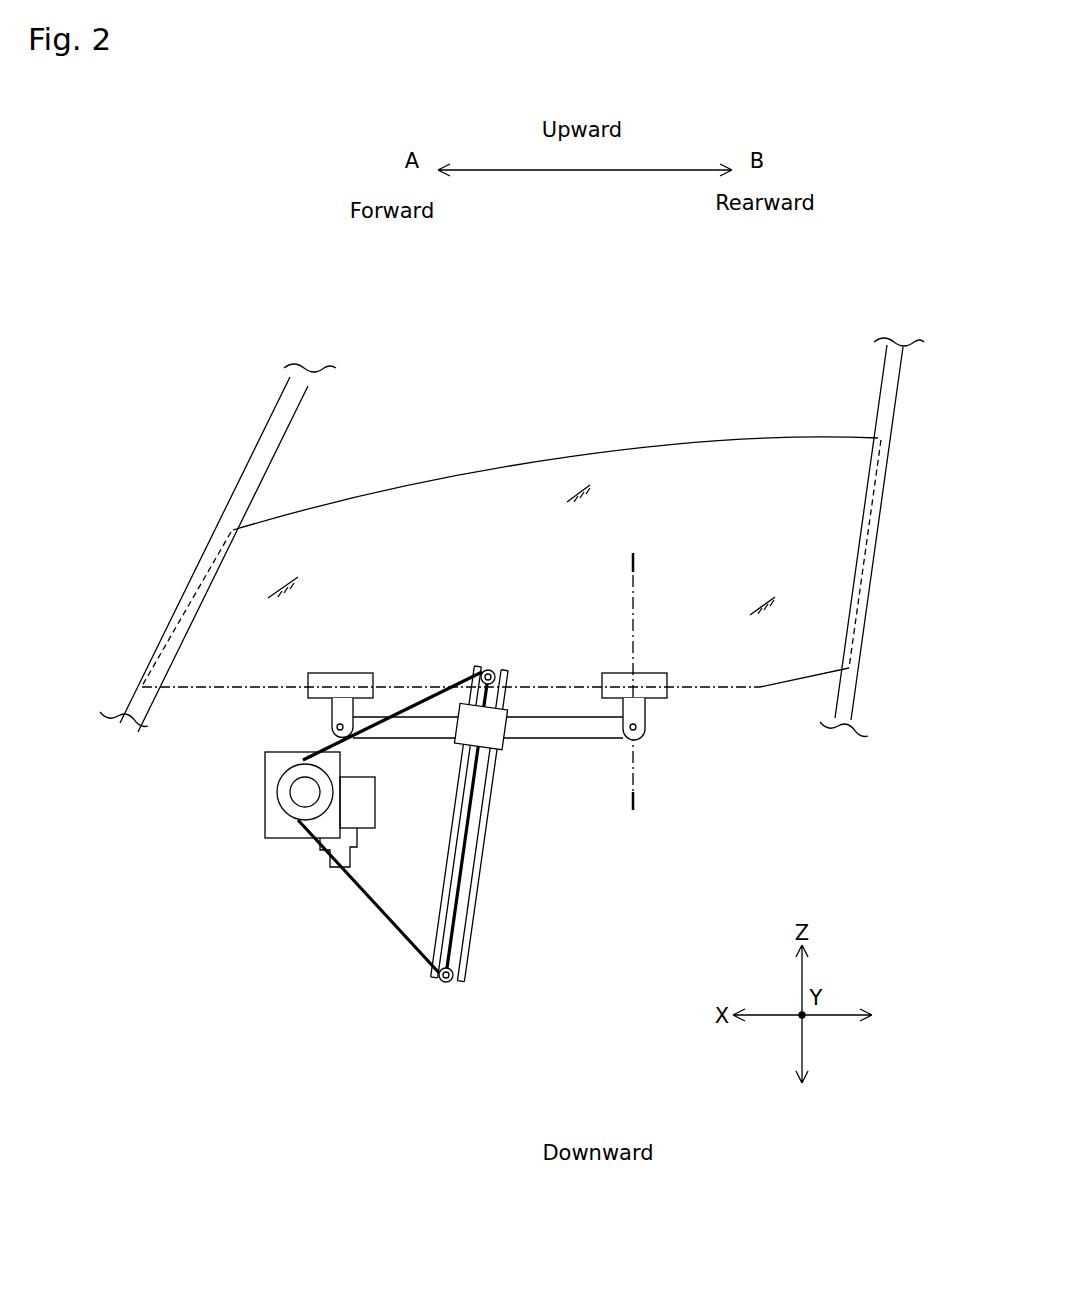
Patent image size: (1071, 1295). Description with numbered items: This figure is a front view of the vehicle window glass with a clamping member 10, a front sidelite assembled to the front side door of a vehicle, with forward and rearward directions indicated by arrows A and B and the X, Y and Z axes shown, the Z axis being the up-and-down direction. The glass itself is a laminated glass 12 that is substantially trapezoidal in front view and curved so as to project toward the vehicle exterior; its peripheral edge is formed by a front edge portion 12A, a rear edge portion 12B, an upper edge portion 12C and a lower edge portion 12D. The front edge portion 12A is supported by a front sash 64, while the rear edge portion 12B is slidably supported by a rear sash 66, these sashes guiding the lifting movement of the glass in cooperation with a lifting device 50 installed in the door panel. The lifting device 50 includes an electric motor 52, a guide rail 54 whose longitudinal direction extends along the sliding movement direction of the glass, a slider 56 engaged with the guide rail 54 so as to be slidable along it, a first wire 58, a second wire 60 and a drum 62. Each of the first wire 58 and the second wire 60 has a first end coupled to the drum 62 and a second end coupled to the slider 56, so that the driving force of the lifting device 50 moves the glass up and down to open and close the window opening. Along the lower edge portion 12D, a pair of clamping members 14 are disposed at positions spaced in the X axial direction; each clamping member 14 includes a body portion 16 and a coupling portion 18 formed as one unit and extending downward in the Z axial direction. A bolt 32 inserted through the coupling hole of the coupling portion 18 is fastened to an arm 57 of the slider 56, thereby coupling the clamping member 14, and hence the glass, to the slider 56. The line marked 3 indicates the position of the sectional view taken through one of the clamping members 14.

The section line 3 is at (650, 807).
The vehicle window glass with a clamping member 10 is at (680, 357).
The laminated glass 12 is at (542, 556).
The front edge portion 12A is at (204, 572).
The rear edge portion 12B is at (872, 550).
The upper edge portion 12C is at (596, 447).
The lower edge portion 12D is at (728, 690).
The clamping member 14 is at (290, 686).
The body portion 16 is at (338, 680).
The coupling portion 18 is at (336, 710).
The bolt 32 is at (630, 728).
The lifting device 50 is at (258, 744).
The electric motor 52 is at (312, 809).
The guide rail 54 is at (485, 836).
The slider 56 is at (519, 747).
The arm 57 is at (413, 738).
The first wire 58 is at (328, 740).
The second wire 60 is at (392, 928).
The drum 62 is at (282, 788).
The front sash 64 is at (266, 445).
The rear sash 66 is at (902, 393).